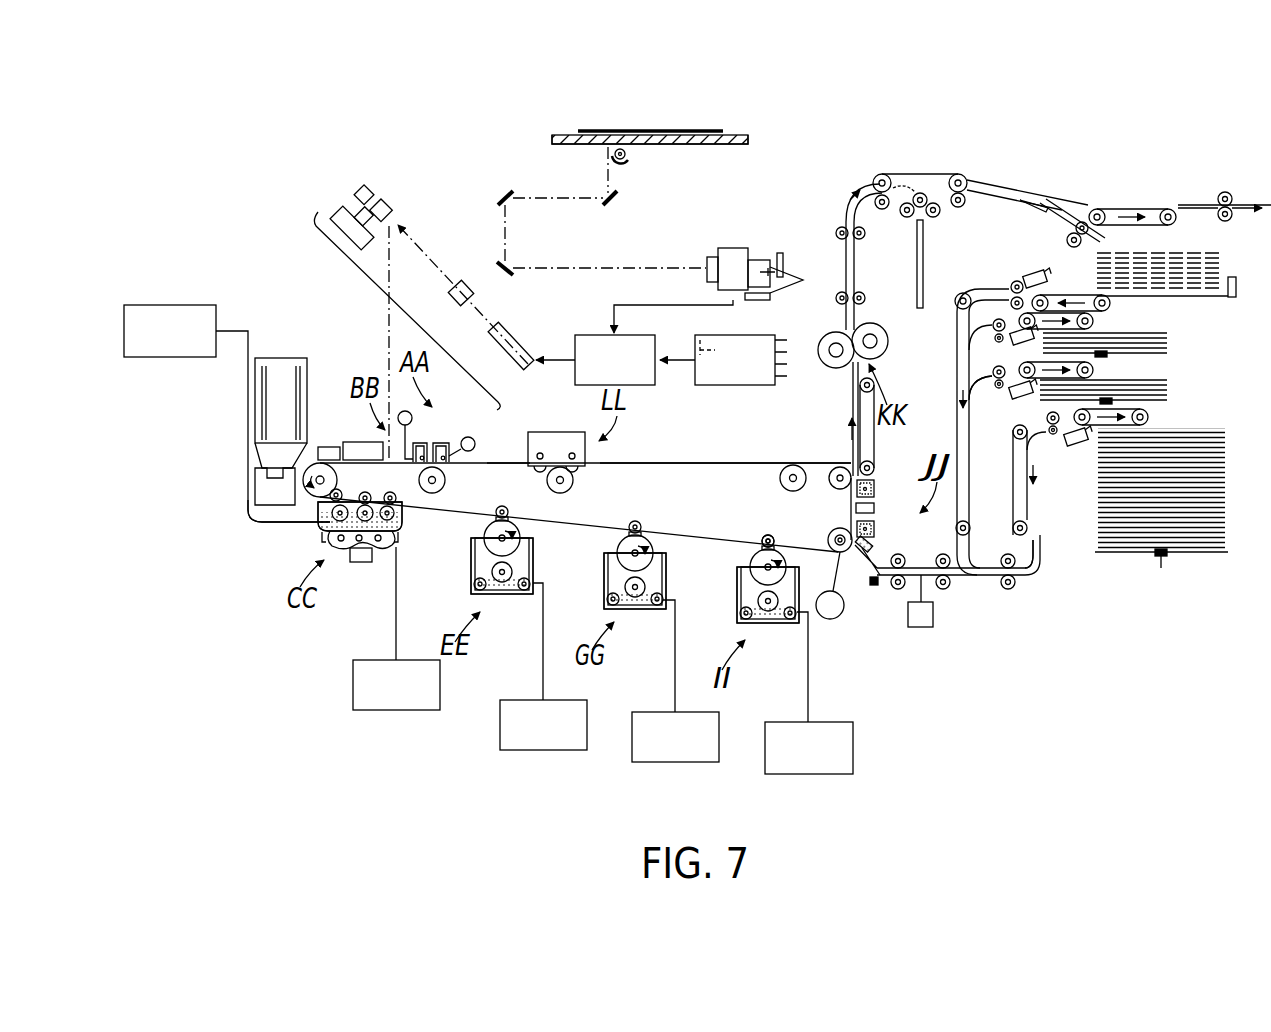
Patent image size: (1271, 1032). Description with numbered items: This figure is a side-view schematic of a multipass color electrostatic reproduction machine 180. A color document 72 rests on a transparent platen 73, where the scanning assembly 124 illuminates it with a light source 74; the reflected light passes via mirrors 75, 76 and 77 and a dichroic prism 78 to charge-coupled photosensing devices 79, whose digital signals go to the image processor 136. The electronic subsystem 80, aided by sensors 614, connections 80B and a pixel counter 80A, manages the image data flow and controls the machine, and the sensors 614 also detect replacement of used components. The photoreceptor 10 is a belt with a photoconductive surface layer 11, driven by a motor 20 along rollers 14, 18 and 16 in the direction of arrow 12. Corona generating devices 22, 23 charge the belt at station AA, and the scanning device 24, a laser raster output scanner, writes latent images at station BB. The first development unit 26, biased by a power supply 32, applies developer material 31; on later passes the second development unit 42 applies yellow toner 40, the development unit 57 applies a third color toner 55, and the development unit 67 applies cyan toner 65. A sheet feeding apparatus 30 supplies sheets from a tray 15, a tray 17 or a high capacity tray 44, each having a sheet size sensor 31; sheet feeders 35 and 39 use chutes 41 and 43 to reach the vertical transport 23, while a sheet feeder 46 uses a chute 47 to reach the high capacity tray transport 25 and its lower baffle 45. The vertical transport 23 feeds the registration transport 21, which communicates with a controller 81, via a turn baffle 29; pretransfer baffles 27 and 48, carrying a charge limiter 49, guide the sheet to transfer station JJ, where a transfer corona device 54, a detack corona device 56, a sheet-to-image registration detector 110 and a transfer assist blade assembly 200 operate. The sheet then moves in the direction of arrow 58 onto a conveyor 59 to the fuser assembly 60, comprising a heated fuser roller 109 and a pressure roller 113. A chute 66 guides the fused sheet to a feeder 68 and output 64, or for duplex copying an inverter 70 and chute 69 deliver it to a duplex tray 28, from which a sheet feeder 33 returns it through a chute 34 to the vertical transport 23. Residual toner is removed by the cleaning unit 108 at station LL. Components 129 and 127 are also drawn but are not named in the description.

The sensors 614 is at (173, 305).
The connections 80B is at (233, 331).
The paper supply cassette 129 is at (280, 358).
The roller 16 is at (305, 467).
The sheet feed path 127 is at (280, 527).
The photoreceptor 10 is at (694, 444).
The photoconductive surface layer 11 is at (710, 465).
The scanning device 24 is at (382, 296).
The corona generating device 22 is at (446, 448).
The corona generating device 23 is at (418, 440).
The cleaning unit 108 is at (552, 432).
The arrow 12 is at (488, 471).
The development unit 26 is at (379, 548).
The developer material 31 is at (393, 518).
The power supply 32 is at (358, 563).
The developer material 40 is at (478, 580).
The second development unit 42 is at (503, 595).
The third color toner 55 is at (612, 592).
The development unit 57 is at (635, 610).
The cyan color toner 65 is at (745, 604).
The development unit 67 is at (768, 624).
The roller 14 is at (815, 546).
The scanning assembly 124 is at (523, 129).
The color document 72 is at (648, 131).
The transparent platen 73 is at (745, 145).
The light source 74 is at (628, 160).
The mirror 75 is at (618, 204).
The mirror 76 is at (505, 191).
The mirror 77 is at (516, 276).
The dichroic prism 78 is at (733, 248).
The charged-coupled linear photosensing devices 79 is at (803, 281).
The image processor 136 is at (634, 386).
The electronic subsystem 80 is at (736, 386).
The pixel counter 80A is at (698, 338).
The heated fuser roller 109 is at (827, 368).
The backup or pressure roller 113 is at (873, 324).
The fuser assembly 60 is at (834, 383).
The arrow 58 is at (850, 438).
The roller 18 is at (816, 485).
The transfer corona device 54 is at (856, 510).
The detack corona device 56 is at (856, 491).
The sheet-to-image registration detector 110 is at (881, 502).
The transfer assist blade assembly 200 is at (879, 555).
The conveyor 59 is at (880, 440).
The chute 66 is at (874, 181).
The inverter 70 is at (916, 246).
The chute 69 is at (1060, 223).
The feeder 68 is at (1150, 227).
The output 64 is at (1238, 190).
The duplex tray 28 is at (1214, 296).
The sheet feeder 33 is at (1112, 298).
The sheet feeder 35 is at (1095, 322).
The chute 34 is at (968, 297).
The chute 41 is at (990, 331).
The chute 43 is at (993, 376).
The chute 47 is at (1040, 421).
The high capacity tray transport 25 is at (1008, 438).
The turn baffle 29 is at (966, 568).
The tray 15 is at (1170, 342).
The sheet feeder 39 is at (1095, 369).
The tray 17 is at (1170, 384).
The sheet feeder 46 is at (1150, 416).
The high capacity tray 44 is at (1222, 492).
The pretransfer baffles 27 is at (864, 563).
The charge limiter 49 is at (876, 586).
The pretransfer baffle 48 is at (893, 562).
The registration transport 21 is at (928, 560).
The lower baffle 45 is at (1036, 565).
The sheet feeding apparatus 30 is at (1030, 584).
The controller 81 is at (921, 628).
The motor 20 is at (832, 620).
The multipass color electrostatic reproduction machine 180 is at (801, 146).